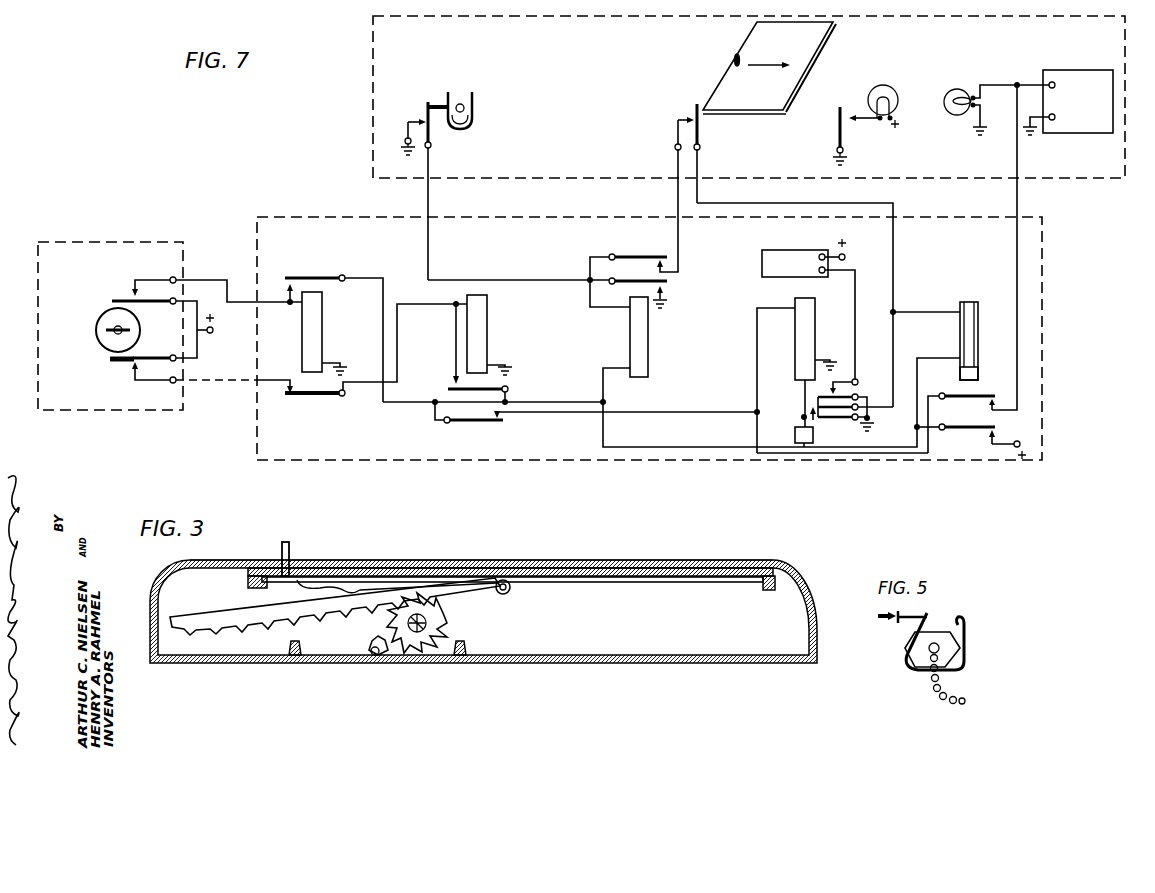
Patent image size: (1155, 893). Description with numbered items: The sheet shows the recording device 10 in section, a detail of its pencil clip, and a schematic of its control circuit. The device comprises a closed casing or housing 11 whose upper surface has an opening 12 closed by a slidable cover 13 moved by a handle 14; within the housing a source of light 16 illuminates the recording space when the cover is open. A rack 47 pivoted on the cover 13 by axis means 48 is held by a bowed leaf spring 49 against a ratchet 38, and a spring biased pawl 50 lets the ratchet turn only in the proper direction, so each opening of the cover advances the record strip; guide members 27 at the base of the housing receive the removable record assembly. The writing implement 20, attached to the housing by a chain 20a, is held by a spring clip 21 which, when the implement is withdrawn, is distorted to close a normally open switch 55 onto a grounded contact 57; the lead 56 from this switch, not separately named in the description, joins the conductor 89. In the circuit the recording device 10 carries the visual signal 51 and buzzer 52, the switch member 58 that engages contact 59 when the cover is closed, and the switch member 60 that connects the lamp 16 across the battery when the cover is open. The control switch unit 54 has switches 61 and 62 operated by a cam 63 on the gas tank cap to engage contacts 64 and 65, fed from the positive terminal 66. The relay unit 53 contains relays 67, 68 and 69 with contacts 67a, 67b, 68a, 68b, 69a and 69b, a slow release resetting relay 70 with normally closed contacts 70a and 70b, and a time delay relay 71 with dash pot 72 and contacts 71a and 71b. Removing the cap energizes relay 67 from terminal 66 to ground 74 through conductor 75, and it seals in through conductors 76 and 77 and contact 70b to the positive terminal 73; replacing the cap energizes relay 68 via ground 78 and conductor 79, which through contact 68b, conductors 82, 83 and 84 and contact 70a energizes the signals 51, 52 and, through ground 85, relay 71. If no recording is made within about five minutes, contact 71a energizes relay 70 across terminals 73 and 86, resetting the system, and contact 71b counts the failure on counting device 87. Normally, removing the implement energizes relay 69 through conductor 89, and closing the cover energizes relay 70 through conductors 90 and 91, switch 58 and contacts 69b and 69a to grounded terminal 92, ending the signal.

In FIG. 7, the recording device 10 is at (1125, 122).
In FIG. 3, the recording device 10 is at (818, 645).
In FIG. 3, the housing 11 is at (727, 565).
In FIG. 3, the opening 12 is at (318, 563).
In FIG. 7, the slidable cover 13 is at (812, 62).
In FIG. 3, the slidable cover 13 is at (505, 549).
In FIG. 7, the handle 14 is at (734, 57).
In FIG. 3, the handle 14 is at (290, 544).
In FIG. 7, the source of light 16 is at (890, 87).
In FIG. 7, the recording implement 20 is at (462, 104).
In FIG. 5, the recording implement 20 is at (933, 635).
In FIG. 5, the chain 20a is at (944, 690).
In FIG. 7, the spring clip 21 is at (476, 106).
In FIG. 5, the spring clip 21 is at (965, 642).
In FIG. 3, the guide members 27 is at (291, 644).
In FIG. 3, the ratchet 38 is at (420, 606).
In FIG. 3, the rack 47 is at (217, 590).
In FIG. 3, the axis means 48 is at (508, 592).
In FIG. 3, the bowed leaf spring 49 is at (349, 587).
In FIG. 3, the spring biased pawl 50 is at (374, 638).
In FIG. 7, the visual signal 51 is at (962, 88).
In FIG. 7, the buzzer 52 is at (1075, 52).
In FIG. 7, the relay unit 53 is at (1043, 347).
In FIG. 7, the control switch unit 54 is at (138, 412).
In FIG. 7, the switch member 55 is at (424, 105).
In FIG. 5, the switch member 55 is at (897, 624).
In FIG. 7, the conductor 56 is at (432, 160).
In FIG. 7, the grounded contact 57 is at (405, 122).
In FIG. 5, the grounded contact 57 is at (878, 613).
In FIG. 7, the switch member 58 is at (700, 132).
In FIG. 7, the contact 59 is at (690, 112).
In FIG. 7, the switch member 60 is at (843, 133).
In FIG. 7, the switch 61 is at (148, 303).
In FIG. 7, the switch 62 is at (146, 356).
In FIG. 7, the cam member 63 is at (98, 324).
In FIG. 7, the contact 64 is at (133, 288).
In FIG. 7, the contact 65 is at (142, 367).
In FIG. 7, the positive battery terminal 66 is at (212, 334).
In FIG. 7, the relay 67 is at (323, 312).
In FIG. 7, the seal-in contact 67a is at (298, 276).
In FIG. 7, the normally open contact 67b is at (305, 395).
In FIG. 7, the relay 68 is at (489, 312).
In FIG. 7, the seal-in contact 68a is at (508, 388).
In FIG. 7, the normally open contact 68b is at (502, 422).
In FIG. 7, the relay 69 is at (652, 332).
In FIG. 7, the seal-in contact 69a is at (670, 283).
In FIG. 7, the normally open contact 69b is at (653, 237).
In FIG. 7, the slow release resetting relay 70 is at (980, 312).
In FIG. 7, the normally closed contact 70a is at (985, 394).
In FIG. 7, the normally closed contact 70b is at (975, 438).
In FIG. 7, the time delay relay 71 is at (817, 311).
In FIG. 7, the normally open contact 71a is at (830, 422).
In FIG. 7, the normally open contact 71b is at (848, 392).
In FIG. 7, the dash pot 72 is at (795, 437).
In FIG. 7, the positive terminal 73 is at (1022, 442).
In FIG. 7, the ground terminal 74 is at (343, 362).
In FIG. 7, the conductor 75 is at (242, 300).
In FIG. 7, the conductor 76 is at (400, 404).
In FIG. 7, the conductor 77 is at (698, 432).
In FIG. 7, the ground terminal 78 is at (505, 362).
In FIG. 7, the conductor 79 is at (262, 382).
In FIG. 7, the conductor 82 is at (690, 397).
In FIG. 7, the conductor 83 is at (878, 454).
In FIG. 7, the conductor 84 is at (1024, 223).
In FIG. 7, the ground connection 85 is at (849, 350).
In FIG. 7, the battery terminal 86 is at (870, 422).
In FIG. 7, the counting device 87 is at (771, 249).
In FIG. 7, the conductor 89 is at (512, 279).
In FIG. 7, the conductor 90 is at (953, 288).
In FIG. 7, the conductor 91 is at (868, 203).
In FIG. 7, the grounded battery terminal 92 is at (667, 301).